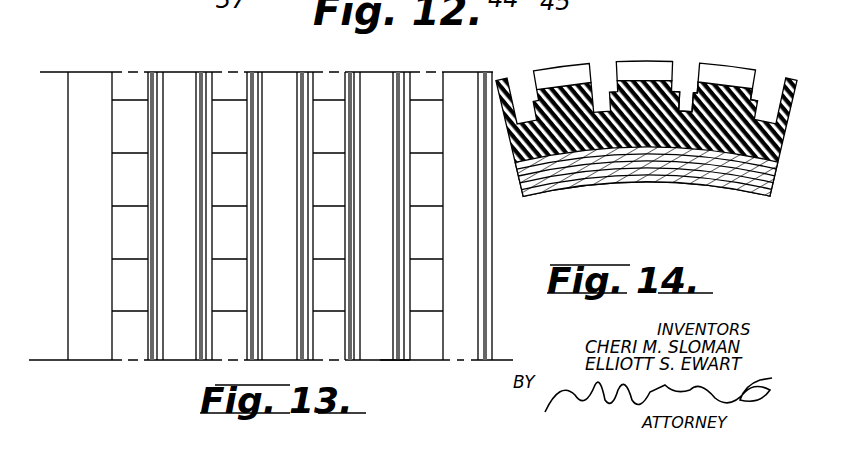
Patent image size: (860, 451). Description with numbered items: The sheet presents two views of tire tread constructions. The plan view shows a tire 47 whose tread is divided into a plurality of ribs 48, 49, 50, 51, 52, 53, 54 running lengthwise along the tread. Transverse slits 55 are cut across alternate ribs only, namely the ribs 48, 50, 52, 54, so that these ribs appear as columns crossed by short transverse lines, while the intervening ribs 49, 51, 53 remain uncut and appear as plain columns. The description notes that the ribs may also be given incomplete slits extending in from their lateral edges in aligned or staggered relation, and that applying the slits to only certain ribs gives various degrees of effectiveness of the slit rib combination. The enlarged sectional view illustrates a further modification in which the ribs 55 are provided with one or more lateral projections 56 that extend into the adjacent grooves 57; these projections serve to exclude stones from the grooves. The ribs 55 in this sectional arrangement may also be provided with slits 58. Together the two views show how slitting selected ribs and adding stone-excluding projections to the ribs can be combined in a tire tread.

In FIG. 13, the tire 47 is at (76, 217).
In FIG. 13, the rib 48 is at (117, 351).
In FIG. 13, the rib 49 is at (168, 352).
In FIG. 13, the rib 50 is at (224, 216).
In FIG. 13, the rib 51 is at (280, 216).
In FIG. 13, the rib 52 is at (323, 216).
In FIG. 13, the rib 53 is at (377, 216).
In FIG. 13, the rib 54 is at (417, 353).
In FIG. 13, the transverse slits / ribs 55 is at (428, 207).
In FIG. 14, the transverse slits / ribs 55 is at (648, 80).
In FIG. 14, the lateral projections 56 is at (683, 88).
In FIG. 14, the grooves 57 is at (700, 86).
In FIG. 14, the slits 58 is at (631, 65).